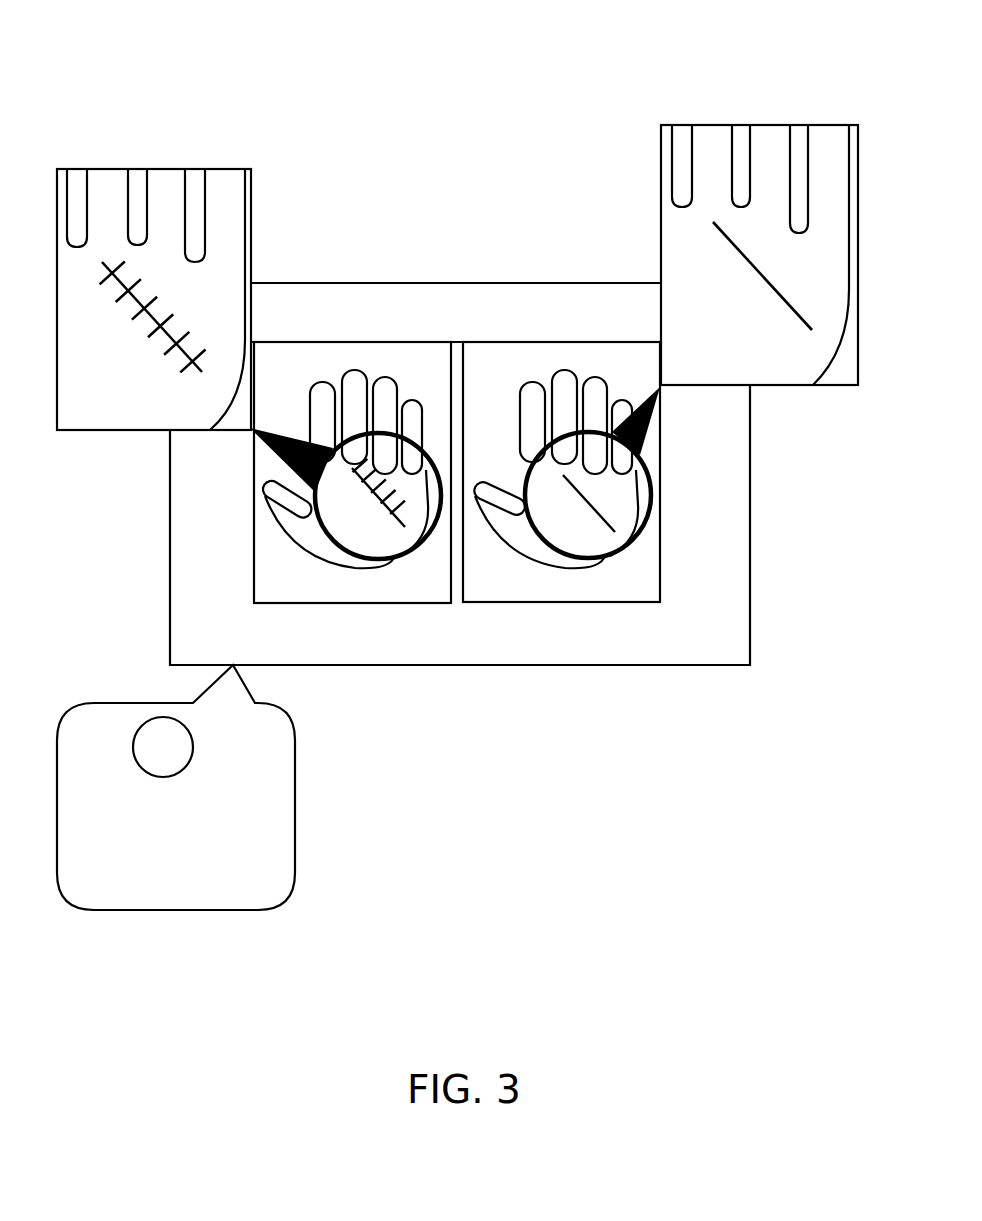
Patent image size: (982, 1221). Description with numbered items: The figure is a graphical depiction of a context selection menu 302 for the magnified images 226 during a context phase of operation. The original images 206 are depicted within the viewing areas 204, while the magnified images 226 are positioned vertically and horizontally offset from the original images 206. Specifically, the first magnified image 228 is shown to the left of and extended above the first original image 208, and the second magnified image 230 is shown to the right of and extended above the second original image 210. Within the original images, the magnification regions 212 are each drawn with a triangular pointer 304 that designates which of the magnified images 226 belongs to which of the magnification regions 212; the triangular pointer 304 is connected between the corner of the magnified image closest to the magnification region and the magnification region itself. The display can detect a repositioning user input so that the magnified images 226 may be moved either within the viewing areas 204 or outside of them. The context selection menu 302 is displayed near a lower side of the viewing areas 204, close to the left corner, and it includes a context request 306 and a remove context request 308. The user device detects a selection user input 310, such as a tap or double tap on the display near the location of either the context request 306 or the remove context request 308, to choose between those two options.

The viewing areas 204 is at (667, 668).
The original images 206 is at (535, 632).
The first original image 208 is at (264, 401).
The second original image 210 is at (590, 358).
The magnification regions 212 is at (308, 518).
The magnified images 226 is at (154, 222).
The first magnified image 228 is at (110, 193).
The second magnified image 230 is at (770, 148).
The context selection menu 302 is at (232, 792).
The triangular pointer 304 is at (312, 497).
The context request 306 is at (259, 745).
The remove context request 308 is at (267, 857).
The selection user input 310 is at (165, 717).